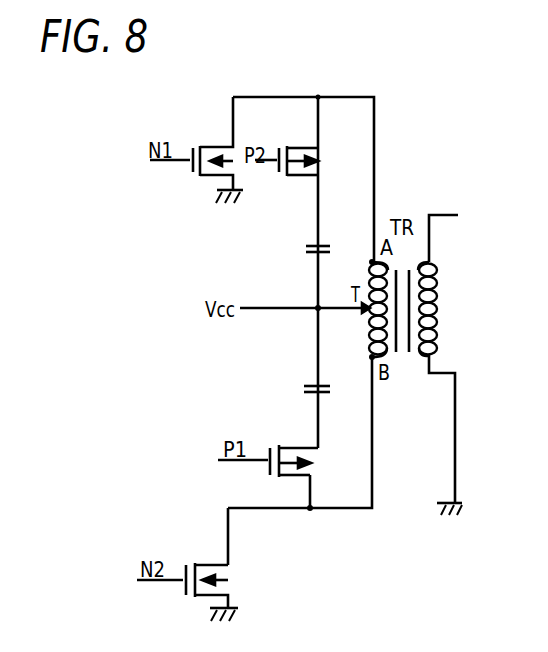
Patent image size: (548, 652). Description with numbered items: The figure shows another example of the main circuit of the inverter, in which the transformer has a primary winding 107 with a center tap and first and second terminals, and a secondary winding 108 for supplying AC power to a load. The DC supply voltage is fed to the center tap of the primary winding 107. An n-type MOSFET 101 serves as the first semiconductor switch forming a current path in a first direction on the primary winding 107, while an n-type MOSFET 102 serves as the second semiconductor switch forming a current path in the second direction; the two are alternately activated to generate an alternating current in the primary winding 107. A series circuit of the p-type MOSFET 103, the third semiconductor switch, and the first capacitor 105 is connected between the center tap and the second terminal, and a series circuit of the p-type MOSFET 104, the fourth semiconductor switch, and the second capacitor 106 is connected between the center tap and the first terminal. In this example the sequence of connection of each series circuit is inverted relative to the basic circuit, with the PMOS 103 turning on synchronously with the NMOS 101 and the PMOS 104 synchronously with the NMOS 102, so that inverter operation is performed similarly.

The n-type MOSFET 101 is at (210, 144).
The n-type MOSFET 102 is at (192, 563).
The p-type MOSFET 103 is at (280, 447).
The p-type MOSFET 104 is at (291, 145).
The first capacitor 105 is at (304, 388).
The second capacitor 106 is at (306, 249).
The primary winding 107 is at (370, 326).
The secondary winding 108 is at (438, 312).